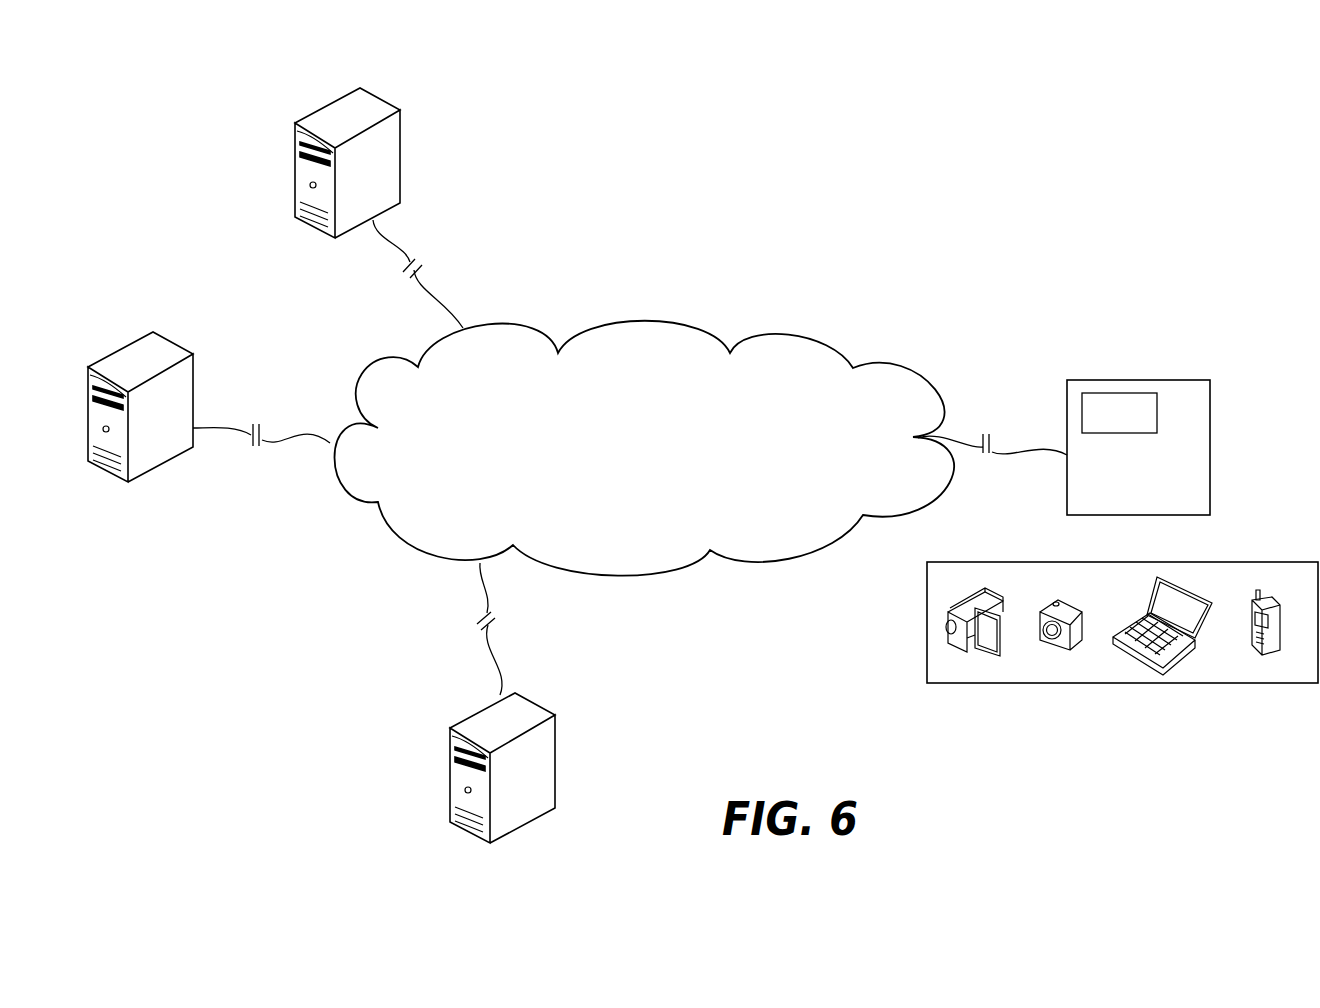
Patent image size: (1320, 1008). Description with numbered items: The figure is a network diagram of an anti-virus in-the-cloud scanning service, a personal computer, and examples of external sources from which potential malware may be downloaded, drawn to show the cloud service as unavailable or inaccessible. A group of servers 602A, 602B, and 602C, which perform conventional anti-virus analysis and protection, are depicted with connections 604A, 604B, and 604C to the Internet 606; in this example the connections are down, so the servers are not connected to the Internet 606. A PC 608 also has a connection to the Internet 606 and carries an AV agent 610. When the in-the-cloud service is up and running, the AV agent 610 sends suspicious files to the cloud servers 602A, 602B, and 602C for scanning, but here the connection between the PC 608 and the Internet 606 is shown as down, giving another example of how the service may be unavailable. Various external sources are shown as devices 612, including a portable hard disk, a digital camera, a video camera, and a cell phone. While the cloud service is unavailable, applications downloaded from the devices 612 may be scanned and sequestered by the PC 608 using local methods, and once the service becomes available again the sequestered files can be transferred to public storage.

The server 602A is at (375, 112).
The server 602B is at (172, 338).
The server 602C is at (532, 707).
The connection 604A is at (455, 292).
The connection 604B is at (298, 433).
The connection 604C is at (478, 588).
The Internet 606 is at (613, 477).
The PC 608 is at (1120, 380).
The AV agent 610 is at (1139, 430).
The devices 612 is at (1060, 683).